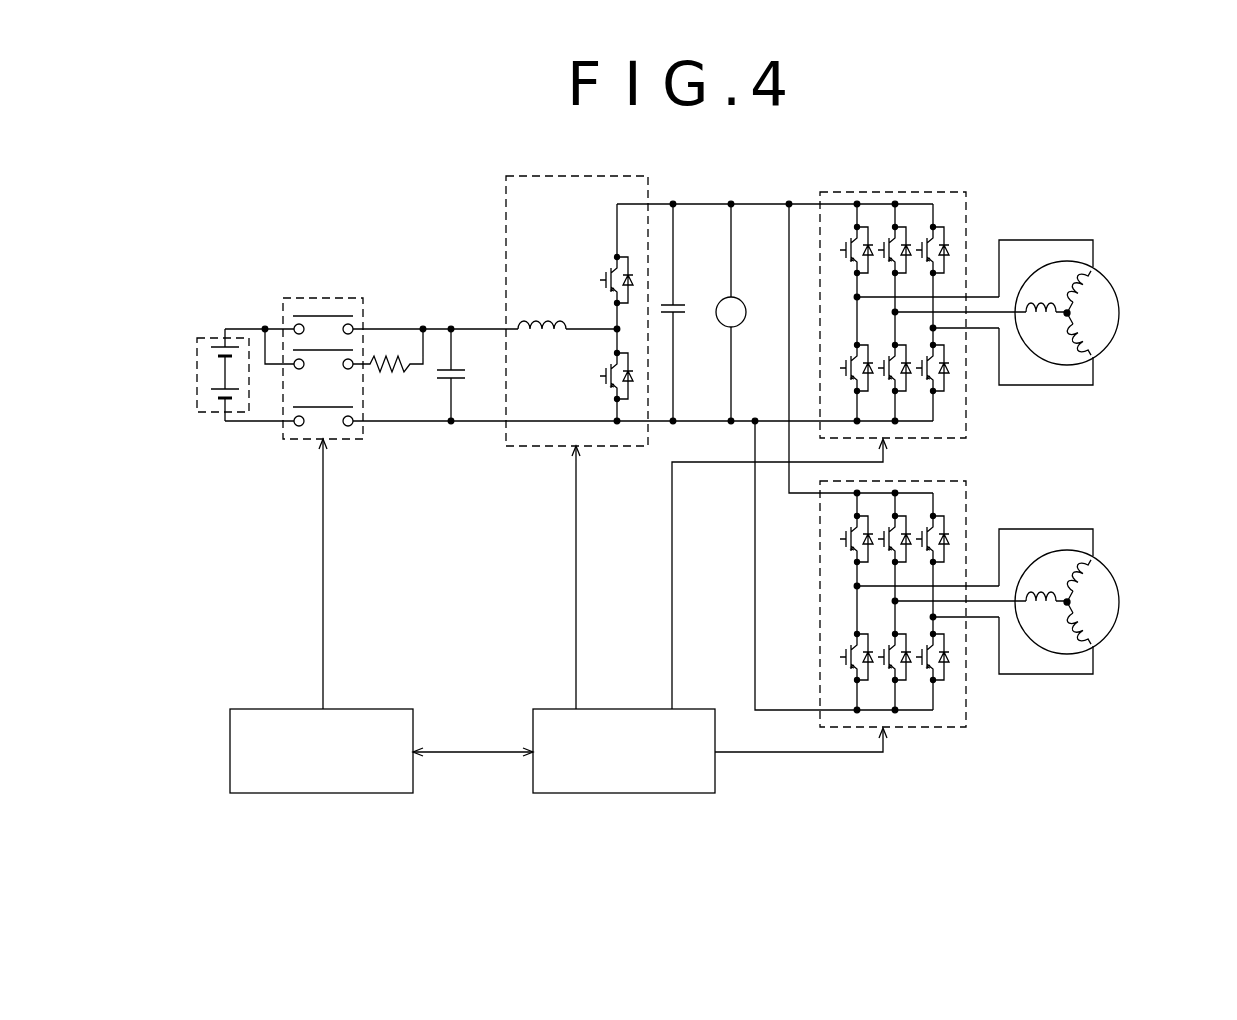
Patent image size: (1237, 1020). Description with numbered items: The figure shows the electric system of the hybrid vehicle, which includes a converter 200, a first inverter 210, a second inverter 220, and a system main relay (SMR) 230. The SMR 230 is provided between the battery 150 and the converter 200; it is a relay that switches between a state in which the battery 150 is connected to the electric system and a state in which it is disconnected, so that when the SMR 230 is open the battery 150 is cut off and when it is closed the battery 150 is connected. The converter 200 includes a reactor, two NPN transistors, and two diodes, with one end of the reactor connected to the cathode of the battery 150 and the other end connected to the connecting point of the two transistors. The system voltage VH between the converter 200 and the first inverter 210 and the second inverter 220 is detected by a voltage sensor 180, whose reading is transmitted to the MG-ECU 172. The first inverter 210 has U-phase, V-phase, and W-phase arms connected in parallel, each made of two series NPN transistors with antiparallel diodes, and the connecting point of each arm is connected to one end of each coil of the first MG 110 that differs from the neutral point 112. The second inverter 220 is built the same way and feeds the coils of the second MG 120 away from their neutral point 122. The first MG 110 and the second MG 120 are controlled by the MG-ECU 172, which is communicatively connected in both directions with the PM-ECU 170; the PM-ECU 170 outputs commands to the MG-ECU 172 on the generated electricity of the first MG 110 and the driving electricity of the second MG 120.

The first MG 110 is at (1105, 350).
The neutral point 112 is at (1067, 310).
The second MG 120 is at (1110, 601).
The neutral point 122 is at (1063, 540).
The battery 150 is at (212, 338).
The PM-ECU 170 is at (251, 709).
The MG-ECU 172 is at (554, 709).
The voltage sensor 180 is at (743, 322).
The converter 200 is at (520, 447).
The first inverter 210 is at (966, 410).
The second inverter 220 is at (955, 606).
The system main relay (SMR) 230 is at (325, 298).